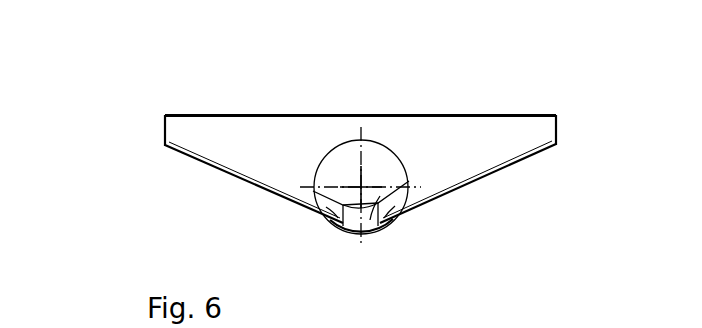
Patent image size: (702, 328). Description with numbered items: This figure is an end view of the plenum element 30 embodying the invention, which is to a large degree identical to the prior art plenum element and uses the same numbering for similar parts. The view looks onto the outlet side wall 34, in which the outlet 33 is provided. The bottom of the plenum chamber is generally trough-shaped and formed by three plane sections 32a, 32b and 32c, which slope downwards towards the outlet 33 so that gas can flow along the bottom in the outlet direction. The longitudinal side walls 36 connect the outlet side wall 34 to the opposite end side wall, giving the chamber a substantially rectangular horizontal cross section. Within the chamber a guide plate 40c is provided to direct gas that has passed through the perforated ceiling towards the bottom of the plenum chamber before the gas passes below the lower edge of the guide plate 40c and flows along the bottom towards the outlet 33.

The plenum element 30 is at (146, 106).
The plane section 32a is at (330, 211).
The plane section 32b is at (384, 200).
The plane section 32c is at (397, 210).
The outlet 33 is at (407, 183).
The outlet side wall 34 is at (301, 170).
The longitudinal side wall 36 is at (165, 135).
The guide plate 40c is at (337, 161).